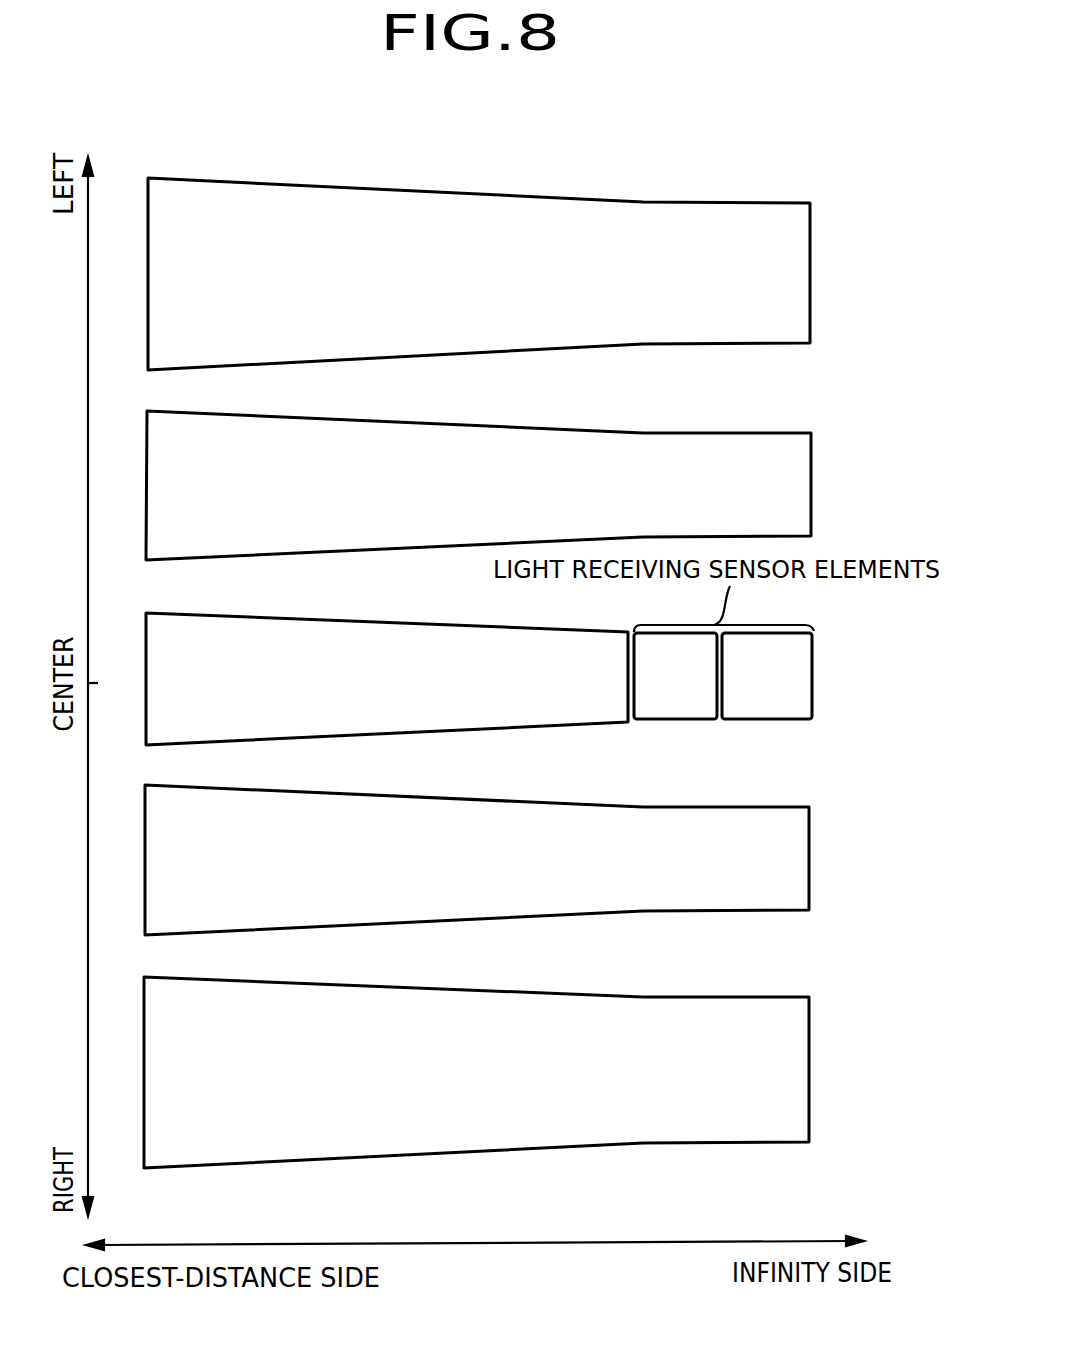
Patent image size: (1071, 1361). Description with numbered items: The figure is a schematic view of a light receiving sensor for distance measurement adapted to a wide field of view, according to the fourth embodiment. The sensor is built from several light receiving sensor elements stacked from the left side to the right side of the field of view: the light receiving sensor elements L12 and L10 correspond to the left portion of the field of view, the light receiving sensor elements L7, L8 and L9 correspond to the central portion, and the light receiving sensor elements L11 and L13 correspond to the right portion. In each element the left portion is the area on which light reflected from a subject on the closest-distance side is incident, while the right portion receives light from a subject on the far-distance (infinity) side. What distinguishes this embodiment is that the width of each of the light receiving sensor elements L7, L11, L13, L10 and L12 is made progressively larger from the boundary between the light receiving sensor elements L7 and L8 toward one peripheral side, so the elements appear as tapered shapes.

The light receiving sensor element L7 is at (387, 679).
The light receiving sensor element L8 is at (675, 676).
The light receiving sensor element L9 is at (767, 676).
The light receiving sensor element L10 is at (478, 485).
The light receiving sensor element L11 is at (477, 860).
The light receiving sensor element L12 is at (479, 274).
The light receiving sensor element L13 is at (476, 1072).